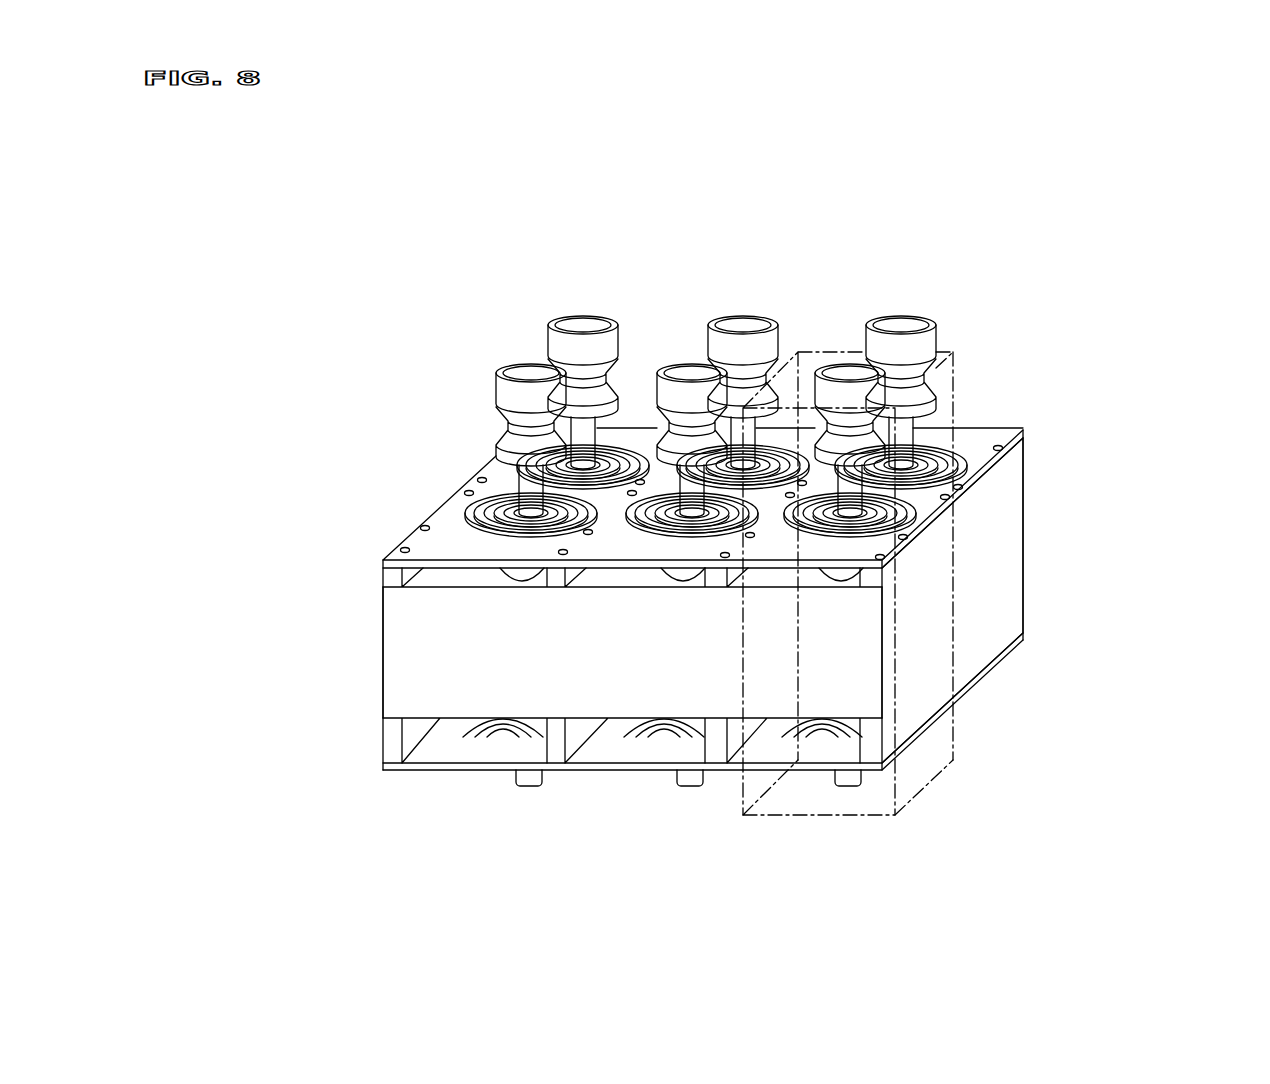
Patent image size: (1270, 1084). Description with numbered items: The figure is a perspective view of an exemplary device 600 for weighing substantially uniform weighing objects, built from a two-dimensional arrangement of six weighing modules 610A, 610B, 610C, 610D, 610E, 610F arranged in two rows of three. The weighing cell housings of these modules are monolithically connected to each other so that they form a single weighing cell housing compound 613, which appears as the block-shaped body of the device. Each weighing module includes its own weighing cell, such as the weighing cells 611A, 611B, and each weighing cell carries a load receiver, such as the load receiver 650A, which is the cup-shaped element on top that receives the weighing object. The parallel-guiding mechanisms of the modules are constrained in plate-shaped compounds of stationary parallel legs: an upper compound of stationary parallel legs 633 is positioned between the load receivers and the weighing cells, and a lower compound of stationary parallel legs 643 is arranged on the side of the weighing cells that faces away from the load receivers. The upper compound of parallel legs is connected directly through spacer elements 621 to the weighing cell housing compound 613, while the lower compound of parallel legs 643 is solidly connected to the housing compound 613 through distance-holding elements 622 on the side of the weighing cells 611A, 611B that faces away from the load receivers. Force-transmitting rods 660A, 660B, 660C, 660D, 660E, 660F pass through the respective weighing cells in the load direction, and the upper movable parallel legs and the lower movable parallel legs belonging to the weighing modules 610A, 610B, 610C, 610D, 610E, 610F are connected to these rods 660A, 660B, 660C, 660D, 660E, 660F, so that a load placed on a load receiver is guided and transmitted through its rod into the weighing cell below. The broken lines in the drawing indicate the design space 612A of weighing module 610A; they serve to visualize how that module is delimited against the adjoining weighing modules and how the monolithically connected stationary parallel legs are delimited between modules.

The device 600 is at (735, 571).
The weighing module 610A is at (1010, 656).
The weighing module 610B is at (648, 569).
The weighing module 610C is at (403, 627).
The weighing module 610D is at (1047, 343).
The weighing module 610E is at (781, 341).
The weighing module 610F is at (430, 340).
The force-transmitting rod 660A is at (870, 493).
The force-transmitting rod 660B is at (683, 480).
The force-transmitting rod 660C is at (533, 482).
The force-transmitting rod 660D is at (902, 443).
The force-transmitting rod 660E is at (745, 430).
The force-transmitting rod 660F is at (580, 433).
The load receiver 650A is at (930, 378).
The design space 612A is at (927, 790).
The spacer elements 621 is at (990, 480).
The upper compound of stationary parallel legs 633 is at (452, 540).
The weighing cell housing compound 613 is at (420, 635).
The weighing cell 611A is at (922, 617).
The weighing cell 611B is at (660, 647).
The distance-holding elements 622 is at (920, 707).
The lower compound of stationary parallel legs 643 is at (472, 748).